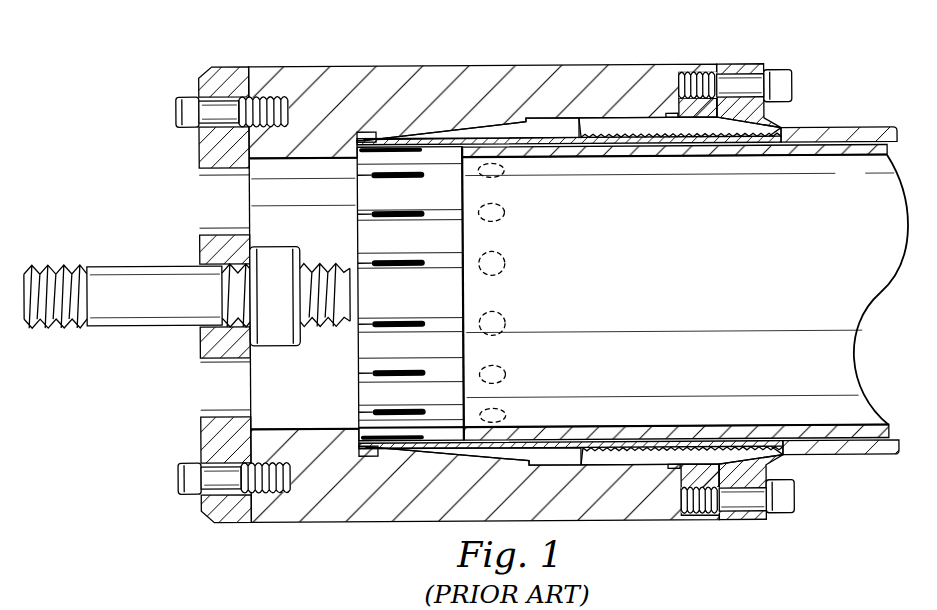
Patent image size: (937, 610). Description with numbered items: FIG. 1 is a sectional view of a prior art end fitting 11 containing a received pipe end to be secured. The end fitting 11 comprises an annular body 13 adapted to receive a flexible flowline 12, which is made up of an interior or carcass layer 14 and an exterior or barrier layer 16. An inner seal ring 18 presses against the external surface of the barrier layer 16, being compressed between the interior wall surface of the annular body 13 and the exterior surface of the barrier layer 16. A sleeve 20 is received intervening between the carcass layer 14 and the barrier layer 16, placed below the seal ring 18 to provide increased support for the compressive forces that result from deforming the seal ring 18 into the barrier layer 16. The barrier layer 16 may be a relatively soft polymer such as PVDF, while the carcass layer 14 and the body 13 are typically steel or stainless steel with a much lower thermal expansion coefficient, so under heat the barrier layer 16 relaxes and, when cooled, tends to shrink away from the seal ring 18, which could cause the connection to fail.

The end fitting 11 is at (415, 61).
The flexible flowline 12 is at (827, 92).
The annular body 13 is at (310, 73).
The carcass layer 14 is at (842, 156).
The barrier layer 16 is at (868, 132).
The inner seal ring 18 is at (652, 117).
The sleeve 20 is at (503, 130).